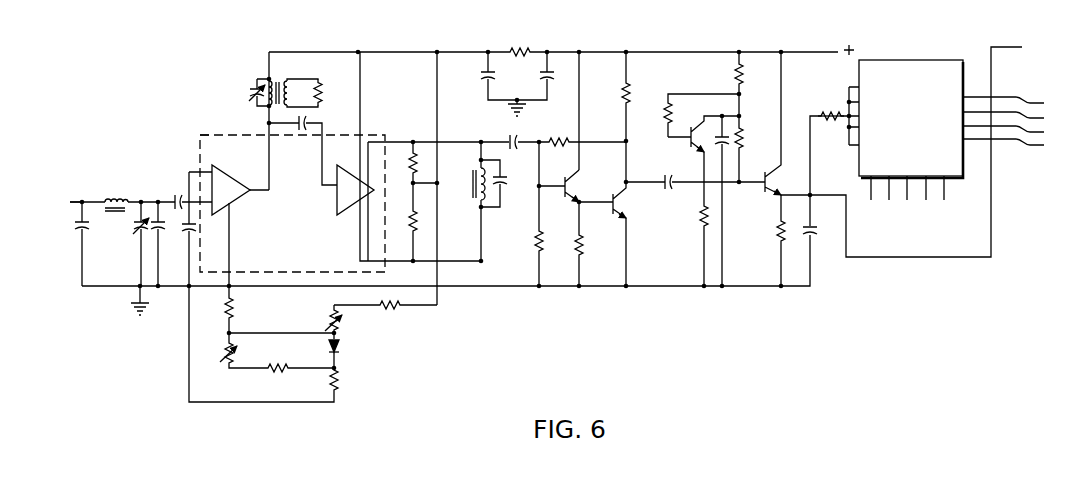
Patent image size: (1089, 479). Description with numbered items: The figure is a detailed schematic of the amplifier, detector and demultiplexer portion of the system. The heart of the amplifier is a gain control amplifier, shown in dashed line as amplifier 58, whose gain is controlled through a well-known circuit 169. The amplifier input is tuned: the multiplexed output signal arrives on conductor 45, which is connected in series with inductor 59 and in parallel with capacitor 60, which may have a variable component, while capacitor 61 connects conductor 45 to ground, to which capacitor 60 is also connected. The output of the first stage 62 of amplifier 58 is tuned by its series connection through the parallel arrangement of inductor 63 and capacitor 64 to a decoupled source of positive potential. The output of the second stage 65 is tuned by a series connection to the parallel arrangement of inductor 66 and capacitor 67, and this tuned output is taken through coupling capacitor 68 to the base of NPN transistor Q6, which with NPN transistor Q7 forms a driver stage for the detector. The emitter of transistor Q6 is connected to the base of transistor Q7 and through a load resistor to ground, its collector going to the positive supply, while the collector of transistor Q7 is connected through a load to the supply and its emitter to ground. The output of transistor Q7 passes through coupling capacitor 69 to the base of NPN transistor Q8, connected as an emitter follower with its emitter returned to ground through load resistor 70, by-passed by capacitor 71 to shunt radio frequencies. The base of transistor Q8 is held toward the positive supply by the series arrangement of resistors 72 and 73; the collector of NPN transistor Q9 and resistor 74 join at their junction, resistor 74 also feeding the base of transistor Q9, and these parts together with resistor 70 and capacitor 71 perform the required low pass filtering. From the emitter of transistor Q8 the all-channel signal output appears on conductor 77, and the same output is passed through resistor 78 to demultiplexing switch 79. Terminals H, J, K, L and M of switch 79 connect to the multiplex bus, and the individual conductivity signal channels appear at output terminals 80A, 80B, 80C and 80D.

The conductor 45 is at (90, 192).
The inductor 59 is at (124, 201).
The capacitor 60 is at (141, 230).
The capacitor 61 is at (82, 230).
The first stage 62 is at (251, 190).
The inductor 63 is at (287, 92).
The capacitor 64 is at (253, 92).
The second stage 65 is at (337, 200).
The amplifier 58 is at (367, 135).
The inductor 66 is at (472, 196).
The capacitor 67 is at (503, 183).
The coupling capacitor 68 is at (515, 136).
The coupling capacitor 69 is at (673, 186).
The load resistor 70 is at (778, 244).
The capacitor 71 is at (815, 230).
The resistor 72 is at (742, 140).
The resistor 73 is at (742, 85).
The resistor 74 is at (670, 112).
The conductor 77 is at (1018, 47).
The resistor 78 is at (836, 120).
The demultiplexing switch 79 is at (963, 176).
The terminal 80A is at (1019, 96).
The terminal 80B is at (1019, 111).
The terminal 80C is at (1019, 125).
The terminal 80D is at (1020, 138).
The gain control circuit 169 is at (350, 345).
The NPN transistor Q6 is at (572, 182).
The NPN transistor Q7 is at (618, 207).
The NPN transistor Q8 is at (757, 176).
The NPN transistor Q9 is at (691, 146).